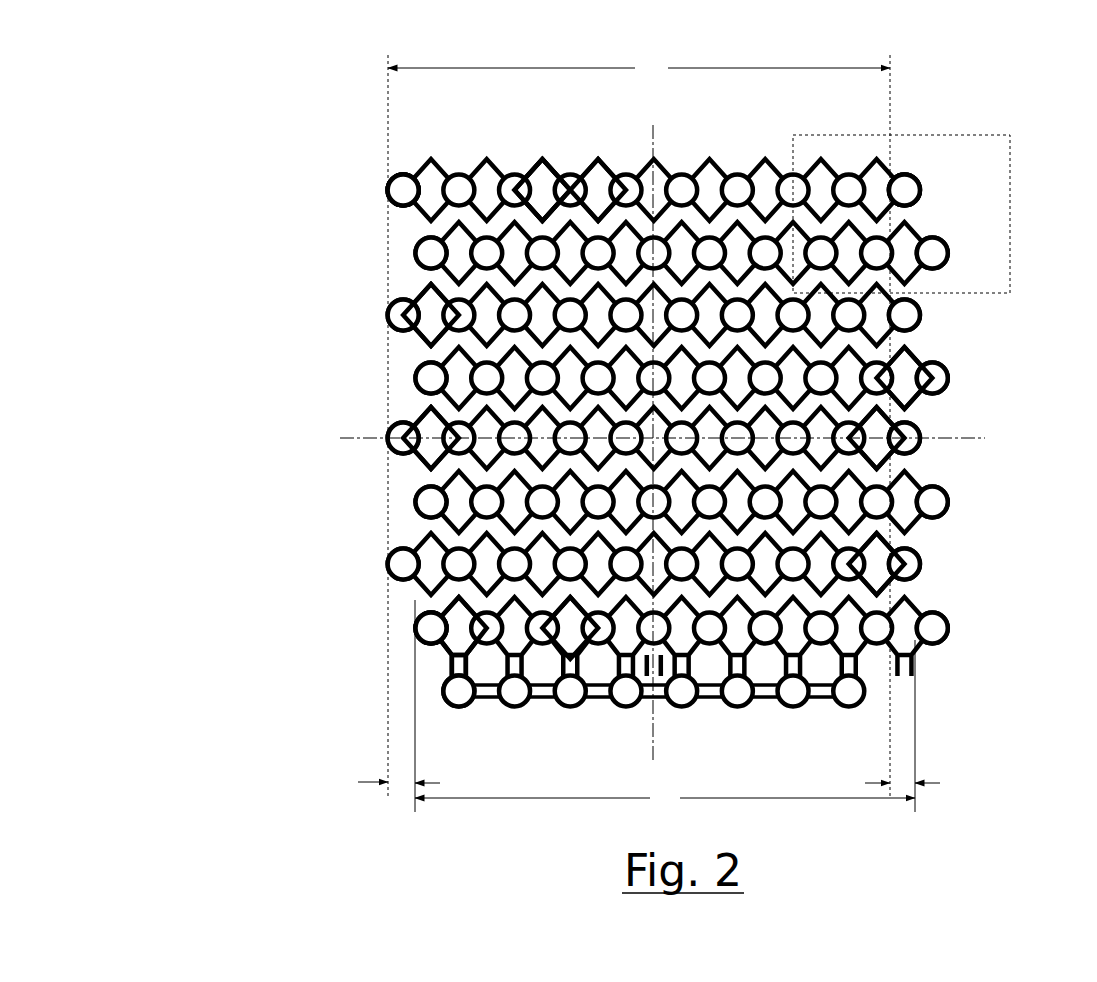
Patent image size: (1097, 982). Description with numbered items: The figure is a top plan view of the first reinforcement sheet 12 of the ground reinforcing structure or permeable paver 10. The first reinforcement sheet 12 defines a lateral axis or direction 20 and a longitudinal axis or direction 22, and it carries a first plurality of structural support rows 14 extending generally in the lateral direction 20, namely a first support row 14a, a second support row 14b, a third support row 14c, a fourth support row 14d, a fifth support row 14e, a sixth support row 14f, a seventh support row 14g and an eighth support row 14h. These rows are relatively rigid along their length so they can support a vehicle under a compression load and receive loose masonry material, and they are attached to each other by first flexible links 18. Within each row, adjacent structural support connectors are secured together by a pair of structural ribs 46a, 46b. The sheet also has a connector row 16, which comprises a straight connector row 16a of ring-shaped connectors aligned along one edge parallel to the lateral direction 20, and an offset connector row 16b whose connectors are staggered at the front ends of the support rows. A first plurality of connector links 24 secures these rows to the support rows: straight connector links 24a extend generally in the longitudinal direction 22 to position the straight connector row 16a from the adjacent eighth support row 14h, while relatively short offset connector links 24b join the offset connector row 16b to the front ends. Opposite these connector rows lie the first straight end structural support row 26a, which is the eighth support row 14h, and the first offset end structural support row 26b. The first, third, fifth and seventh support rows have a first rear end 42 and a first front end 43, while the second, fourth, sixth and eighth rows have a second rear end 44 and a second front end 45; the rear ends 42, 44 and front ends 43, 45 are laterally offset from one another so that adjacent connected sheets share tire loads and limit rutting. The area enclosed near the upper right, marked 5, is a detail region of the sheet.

The ground reinforcing structure 10 is at (348, 100).
The first reinforcement sheet 12 is at (368, 703).
The first plurality of structural support rows 14 is at (235, 437).
The first support row 14a is at (950, 625).
The second support row 14b is at (925, 556).
The third support row 14c is at (952, 490).
The fourth support row 14d is at (925, 432).
The fifth support row 14e is at (950, 370).
The sixth support row 14f is at (922, 312).
The seventh support row 14g is at (950, 246).
The eighth support row 14h is at (922, 184).
The connector row 16 is at (867, 693).
The straight connector row 16a is at (440, 707).
The offset connector row 16b is at (918, 173).
The first flexible links 18 is at (638, 215).
The lateral axis or direction 20 is at (352, 436).
The longitudinal axis or direction 22 is at (655, 742).
The first plurality of connector links 24 is at (922, 365).
The first plurality of straight connector links 24a is at (662, 674).
The first plurality of offset connector links 24b is at (892, 552).
The first straight end structural support row 26a is at (380, 194).
The first offset end structural support row 26b is at (405, 168).
The first rear end 42 is at (416, 248).
The first front end 43 is at (933, 238).
The second rear end 44 is at (390, 180).
The second front end 45 is at (893, 178).
The structural rib 46a is at (535, 155).
The structural rib 46b is at (551, 220).
The detail region of FIG. 5 is at (966, 130).